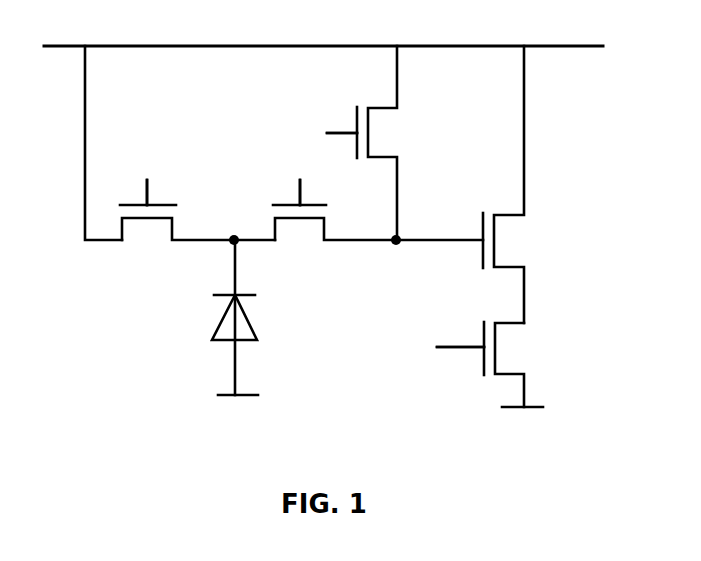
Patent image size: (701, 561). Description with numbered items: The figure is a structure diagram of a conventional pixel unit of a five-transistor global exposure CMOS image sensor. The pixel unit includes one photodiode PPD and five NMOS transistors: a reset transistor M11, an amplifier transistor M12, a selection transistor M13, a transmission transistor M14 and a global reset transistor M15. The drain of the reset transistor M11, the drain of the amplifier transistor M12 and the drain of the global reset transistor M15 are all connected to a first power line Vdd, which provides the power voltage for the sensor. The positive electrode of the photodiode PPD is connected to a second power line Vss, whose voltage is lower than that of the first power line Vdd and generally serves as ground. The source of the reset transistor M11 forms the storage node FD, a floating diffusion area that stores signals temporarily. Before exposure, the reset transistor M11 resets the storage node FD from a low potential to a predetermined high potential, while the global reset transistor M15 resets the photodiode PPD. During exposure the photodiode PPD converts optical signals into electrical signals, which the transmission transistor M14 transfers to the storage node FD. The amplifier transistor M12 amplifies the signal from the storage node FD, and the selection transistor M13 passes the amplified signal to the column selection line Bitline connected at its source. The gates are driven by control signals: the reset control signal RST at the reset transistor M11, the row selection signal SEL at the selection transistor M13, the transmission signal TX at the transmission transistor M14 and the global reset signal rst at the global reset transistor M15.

The reset transistor M11 is at (385, 143).
The amplifier transistor M12 is at (530, 184).
The selection transistor M13 is at (507, 364).
The transmission transistor M14 is at (334, 227).
The global reset transistor M15 is at (177, 225).
The photodiode PPD is at (207, 317).
The storage node FD is at (433, 255).
The first power line Vdd is at (323, 28).
The second power line Vss is at (238, 411).
The column selection line Bitline is at (522, 425).
The reset control signal RST is at (318, 132).
The transmission signal TX is at (299, 180).
The row selection signal SEL is at (438, 350).
The global reset signal rst is at (147, 177).